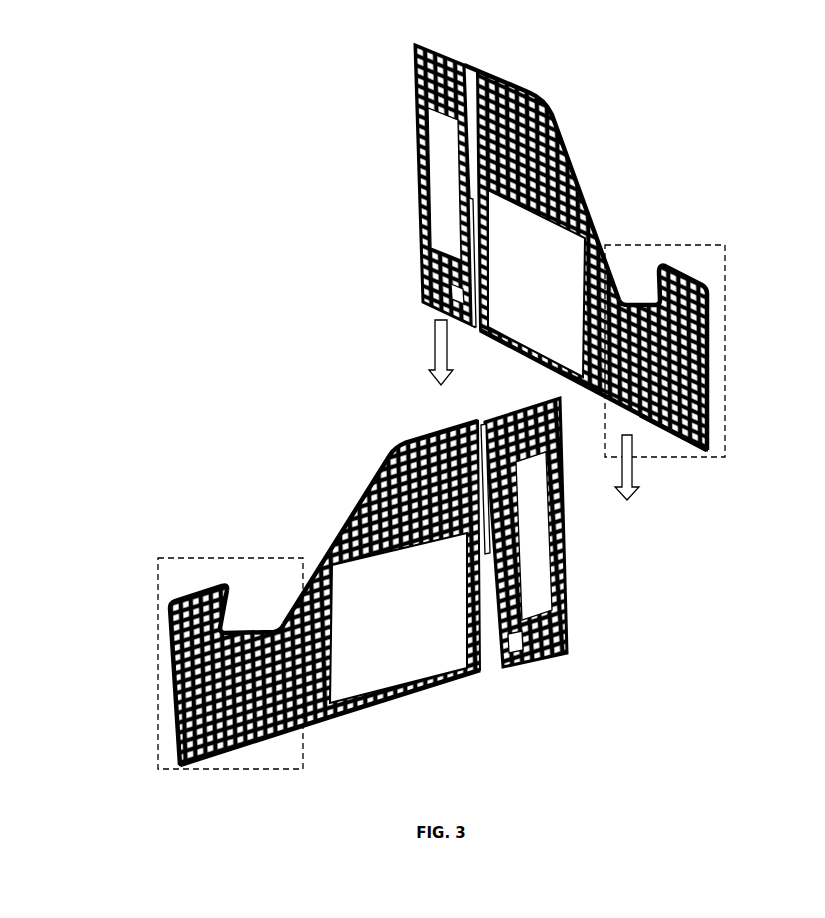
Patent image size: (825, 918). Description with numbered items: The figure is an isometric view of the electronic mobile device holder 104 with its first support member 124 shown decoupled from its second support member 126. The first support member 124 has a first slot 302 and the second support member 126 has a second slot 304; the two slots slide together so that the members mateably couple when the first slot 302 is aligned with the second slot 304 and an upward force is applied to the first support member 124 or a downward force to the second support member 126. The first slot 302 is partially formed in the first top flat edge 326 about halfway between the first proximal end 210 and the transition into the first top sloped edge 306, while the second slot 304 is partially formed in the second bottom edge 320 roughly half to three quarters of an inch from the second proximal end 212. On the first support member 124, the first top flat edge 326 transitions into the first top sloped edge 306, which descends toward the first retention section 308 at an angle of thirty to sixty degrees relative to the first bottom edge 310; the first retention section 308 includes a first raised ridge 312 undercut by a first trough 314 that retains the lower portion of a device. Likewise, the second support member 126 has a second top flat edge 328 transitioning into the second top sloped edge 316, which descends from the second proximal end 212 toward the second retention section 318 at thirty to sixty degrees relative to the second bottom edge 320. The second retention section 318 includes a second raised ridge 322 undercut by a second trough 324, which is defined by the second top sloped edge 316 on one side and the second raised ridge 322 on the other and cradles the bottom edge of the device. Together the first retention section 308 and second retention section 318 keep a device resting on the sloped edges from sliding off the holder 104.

The electronic mobile device holder 104 is at (262, 155).
The second proximal end 212 is at (417, 193).
The second top flat edge 328 is at (508, 89).
The second top sloped edge 316 is at (578, 181).
The second trough 324 is at (633, 259).
The second raised ridge 322 is at (683, 259).
The second retention section 318 is at (724, 282).
The second slot 304 is at (477, 337).
The first slot 302 is at (484, 407).
The first top flat edge 326 is at (408, 436).
The first top sloped edge 306 is at (343, 503).
The first raised ridge 312 is at (210, 577).
The first trough 314 is at (253, 577).
The second bottom edge 320 is at (577, 397).
The second support member 126 is at (652, 430).
The first proximal end 210 is at (575, 562).
The first retention section 308 is at (158, 662).
The first support member 124 is at (333, 708).
The first bottom edge 310 is at (458, 695).